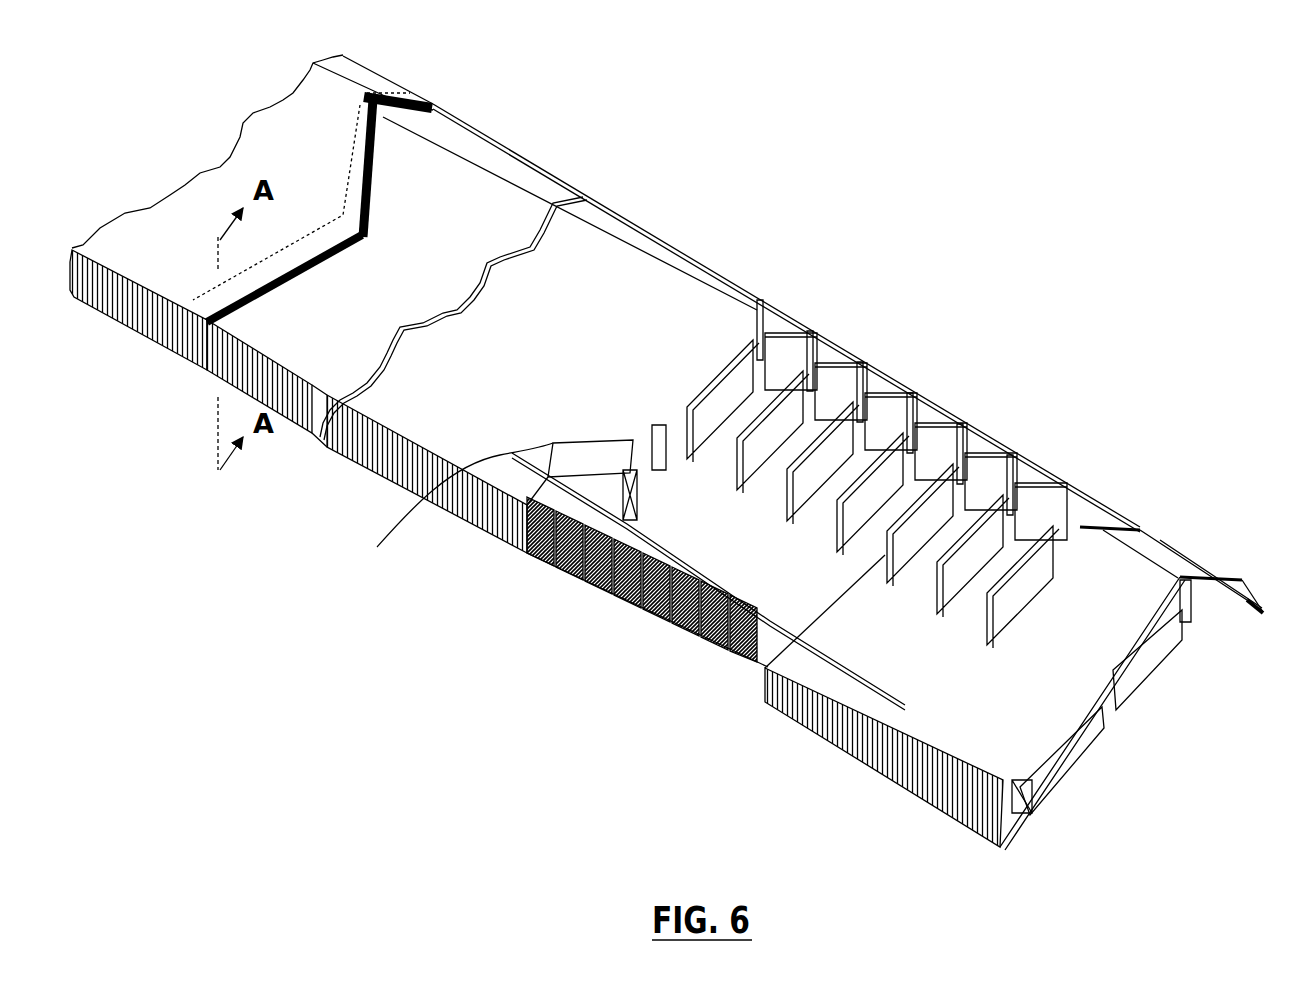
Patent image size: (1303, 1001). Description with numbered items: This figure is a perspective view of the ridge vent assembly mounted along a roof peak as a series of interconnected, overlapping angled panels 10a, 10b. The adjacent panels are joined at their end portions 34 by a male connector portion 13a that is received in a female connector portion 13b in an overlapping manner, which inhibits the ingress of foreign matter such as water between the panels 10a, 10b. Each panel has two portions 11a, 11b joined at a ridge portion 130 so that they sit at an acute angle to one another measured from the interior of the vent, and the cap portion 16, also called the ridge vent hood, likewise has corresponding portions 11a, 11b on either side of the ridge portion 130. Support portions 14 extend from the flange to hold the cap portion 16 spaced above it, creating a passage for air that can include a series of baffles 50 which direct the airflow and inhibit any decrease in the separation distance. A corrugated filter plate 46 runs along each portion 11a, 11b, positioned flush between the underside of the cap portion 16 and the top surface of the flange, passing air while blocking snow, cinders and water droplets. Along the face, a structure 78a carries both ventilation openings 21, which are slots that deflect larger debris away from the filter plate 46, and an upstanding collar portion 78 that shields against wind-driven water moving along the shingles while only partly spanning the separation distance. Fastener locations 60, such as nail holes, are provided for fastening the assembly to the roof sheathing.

The angled panel 10a is at (677, 272).
The angled panel 10b is at (375, 75).
The portion 11a is at (1055, 670).
The portion 11b is at (1173, 543).
The male connector portion 13a is at (447, 117).
The female connector portion 13b is at (440, 107).
The support portion 14 is at (857, 350).
The cap portion 16 is at (648, 226).
The ventilation openings 21 is at (873, 746).
The end portion 34 is at (1048, 831).
The corrugated filter plate 46 is at (634, 607).
The baffles 50 is at (947, 422).
The fastener location 60 is at (425, 350).
The collar portion 78 is at (505, 555).
The structure 78a is at (467, 500).
The ridge portion 130 is at (1145, 527).